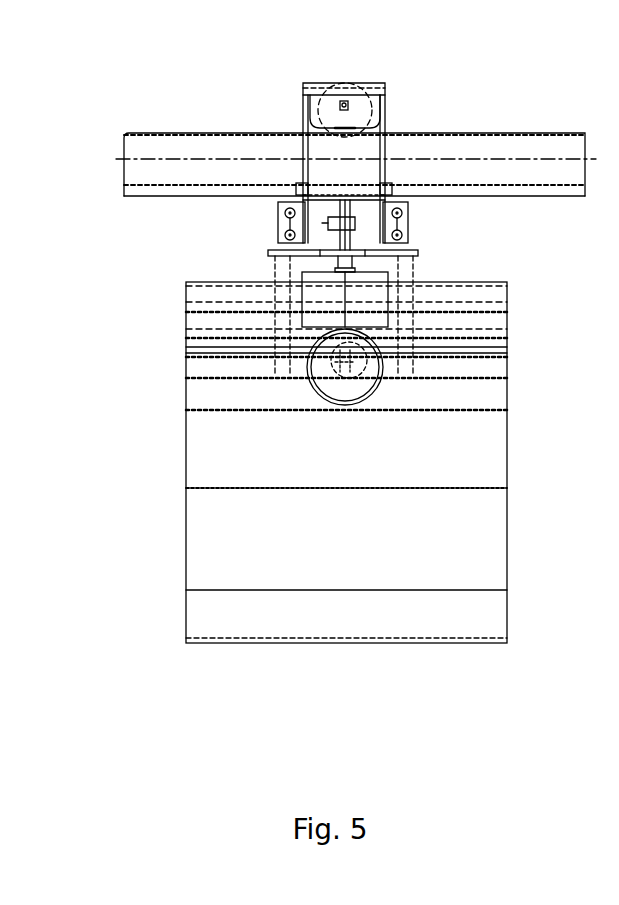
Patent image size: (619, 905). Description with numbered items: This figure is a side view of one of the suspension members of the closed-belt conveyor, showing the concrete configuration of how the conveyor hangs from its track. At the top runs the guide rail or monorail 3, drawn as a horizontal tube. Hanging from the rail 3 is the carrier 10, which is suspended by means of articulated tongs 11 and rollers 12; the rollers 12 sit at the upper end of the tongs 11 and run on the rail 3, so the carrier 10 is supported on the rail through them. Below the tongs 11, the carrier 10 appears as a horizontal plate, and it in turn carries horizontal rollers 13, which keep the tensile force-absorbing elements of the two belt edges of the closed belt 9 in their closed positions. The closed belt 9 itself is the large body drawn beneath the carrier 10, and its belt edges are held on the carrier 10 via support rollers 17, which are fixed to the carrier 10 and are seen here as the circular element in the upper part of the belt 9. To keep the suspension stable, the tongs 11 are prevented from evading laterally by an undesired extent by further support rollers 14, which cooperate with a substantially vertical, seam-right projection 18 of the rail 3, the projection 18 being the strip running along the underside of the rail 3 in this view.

The rail 3 is at (462, 147).
The closed belt 9 is at (217, 553).
The carrier 10 is at (415, 251).
The articulated tongs 11 is at (367, 152).
The rollers 12 is at (328, 108).
The horizontal rollers 13 is at (365, 294).
The support rollers 14 is at (303, 188).
The support rollers 17 is at (338, 392).
The projection 18 is at (157, 193).